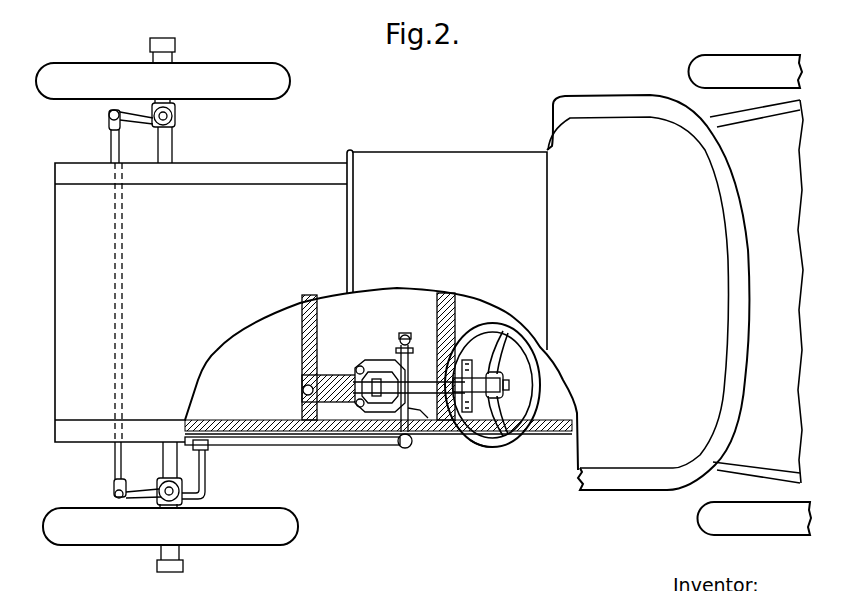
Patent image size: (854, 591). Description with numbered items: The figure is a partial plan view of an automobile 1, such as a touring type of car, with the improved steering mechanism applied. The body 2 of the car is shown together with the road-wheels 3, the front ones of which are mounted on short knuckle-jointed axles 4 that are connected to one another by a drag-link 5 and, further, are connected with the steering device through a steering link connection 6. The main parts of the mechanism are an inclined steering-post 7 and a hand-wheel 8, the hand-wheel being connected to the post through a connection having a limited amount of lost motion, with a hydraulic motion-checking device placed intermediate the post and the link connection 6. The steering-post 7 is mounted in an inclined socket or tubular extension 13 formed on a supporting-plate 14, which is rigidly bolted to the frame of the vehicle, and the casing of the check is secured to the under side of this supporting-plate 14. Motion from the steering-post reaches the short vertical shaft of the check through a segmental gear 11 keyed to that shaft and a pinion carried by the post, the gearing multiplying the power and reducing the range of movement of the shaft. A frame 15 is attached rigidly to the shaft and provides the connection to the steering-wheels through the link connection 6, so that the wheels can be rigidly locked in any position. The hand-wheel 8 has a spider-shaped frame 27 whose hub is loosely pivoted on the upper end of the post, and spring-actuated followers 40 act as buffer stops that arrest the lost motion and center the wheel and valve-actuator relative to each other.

The automobile 1 is at (429, 292).
The body 2 is at (404, 221).
The road-wheels 3 is at (237, 65).
The knuckle-jointed axles 4 is at (203, 480).
The drag-link 5 is at (117, 467).
The steering link connection 6 is at (332, 446).
The steering-post 7 is at (428, 380).
The hand-wheel 8 is at (521, 413).
The segmental gear 11 is at (387, 358).
The tubular extension 13 is at (357, 391).
The supporting-plate 14 is at (328, 374).
The frame 15 is at (415, 408).
The spider-shaped frame 27 is at (503, 357).
The spring-actuated followers 40 is at (477, 437).